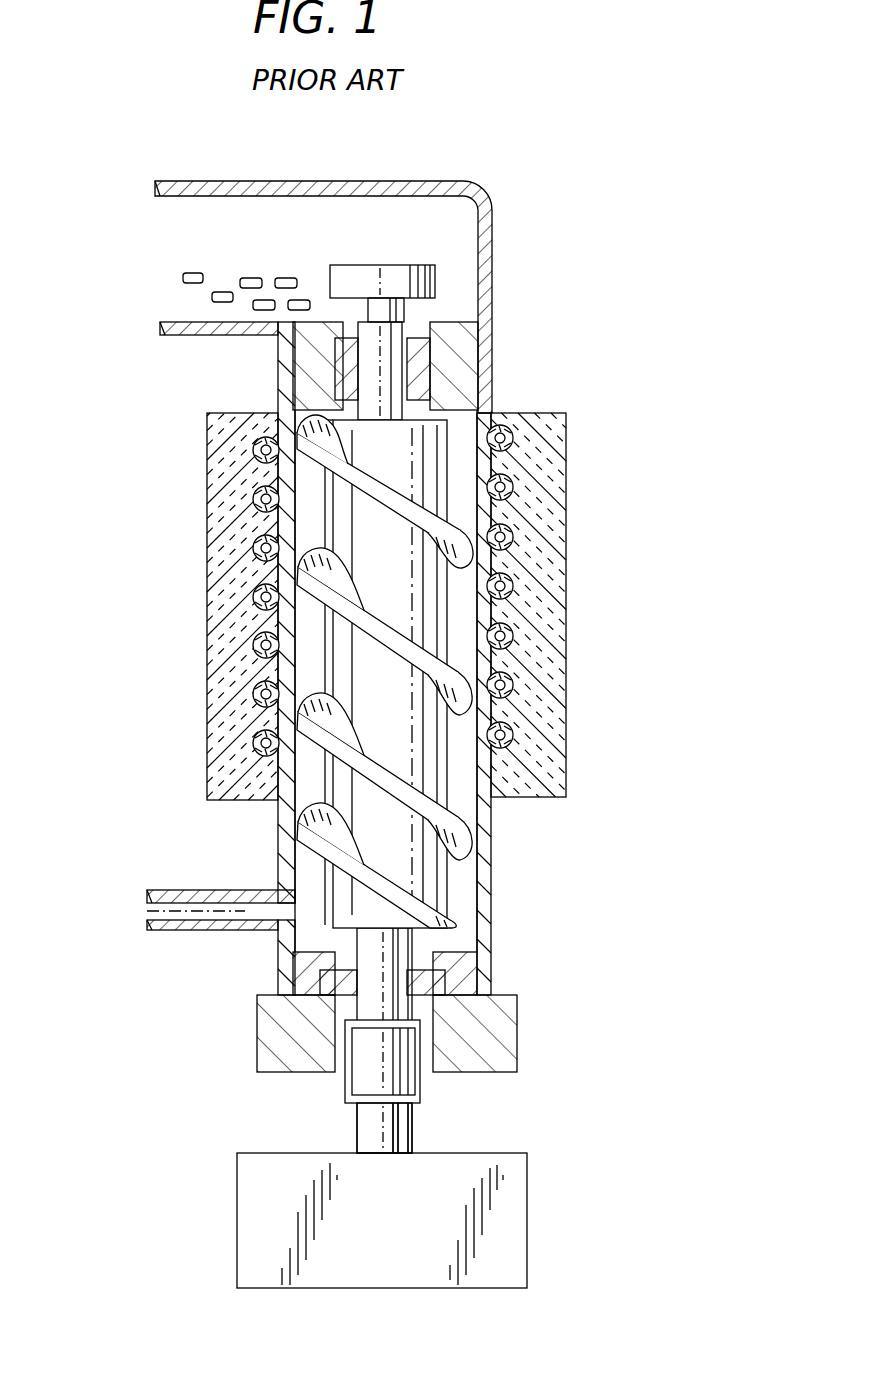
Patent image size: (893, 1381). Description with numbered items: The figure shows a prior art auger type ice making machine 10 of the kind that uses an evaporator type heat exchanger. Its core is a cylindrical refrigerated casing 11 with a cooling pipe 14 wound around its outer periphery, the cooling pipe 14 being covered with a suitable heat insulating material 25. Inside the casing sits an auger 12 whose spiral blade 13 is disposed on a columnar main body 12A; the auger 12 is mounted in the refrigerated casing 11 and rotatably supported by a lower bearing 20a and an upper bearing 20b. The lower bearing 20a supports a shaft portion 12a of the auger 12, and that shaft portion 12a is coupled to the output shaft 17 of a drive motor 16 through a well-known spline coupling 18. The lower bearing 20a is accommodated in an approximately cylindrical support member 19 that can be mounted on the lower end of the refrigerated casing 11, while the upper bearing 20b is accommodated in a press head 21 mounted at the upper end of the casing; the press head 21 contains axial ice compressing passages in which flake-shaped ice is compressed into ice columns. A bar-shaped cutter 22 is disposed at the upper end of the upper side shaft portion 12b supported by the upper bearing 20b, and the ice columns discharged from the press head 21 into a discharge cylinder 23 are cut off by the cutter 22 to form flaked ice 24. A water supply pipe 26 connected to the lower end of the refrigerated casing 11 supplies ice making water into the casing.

The auger type ice making machine 10 is at (152, 540).
The cylindrical refrigerated casing 11 is at (483, 838).
The auger 12 is at (400, 760).
The columnar main body 12A is at (440, 890).
The shaft portion 12a is at (390, 944).
The upper side shaft portion 12b is at (383, 345).
The spiral blade 13 is at (303, 842).
The cooling pipe 14 is at (262, 600).
The drive motor 16 is at (192, 1213).
The output shaft 17 is at (400, 1123).
The spline coupling 18 is at (388, 1073).
The support member 19 is at (478, 1045).
The lower bearing 20a is at (440, 975).
The upper bearing 20b is at (418, 362).
The press head 21 is at (453, 392).
The bar-shaped cutter 22 is at (437, 280).
The discharge cylinder 23 is at (408, 181).
The flaked ice 24 is at (183, 278).
The heat insulating material 25 is at (535, 550).
The water supply pipe 26 is at (198, 932).